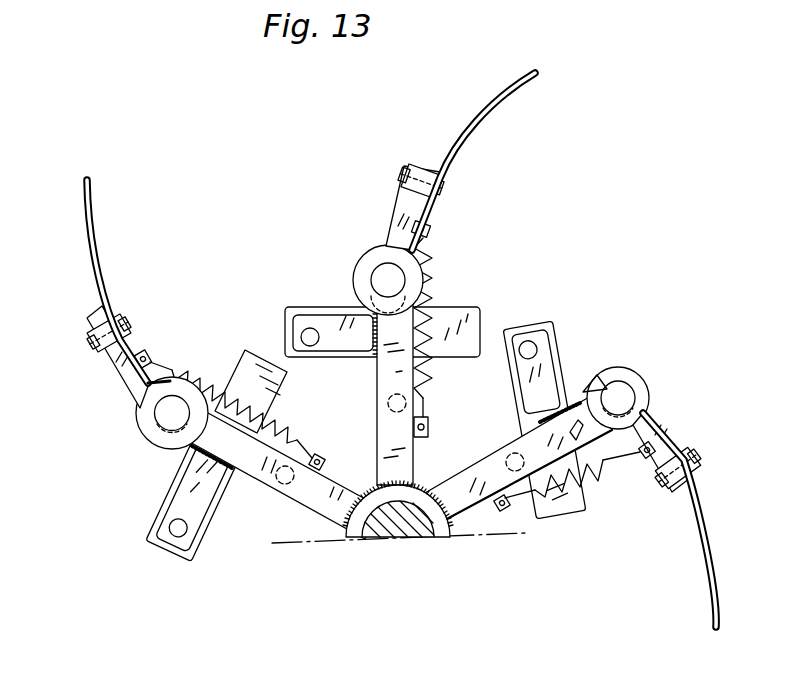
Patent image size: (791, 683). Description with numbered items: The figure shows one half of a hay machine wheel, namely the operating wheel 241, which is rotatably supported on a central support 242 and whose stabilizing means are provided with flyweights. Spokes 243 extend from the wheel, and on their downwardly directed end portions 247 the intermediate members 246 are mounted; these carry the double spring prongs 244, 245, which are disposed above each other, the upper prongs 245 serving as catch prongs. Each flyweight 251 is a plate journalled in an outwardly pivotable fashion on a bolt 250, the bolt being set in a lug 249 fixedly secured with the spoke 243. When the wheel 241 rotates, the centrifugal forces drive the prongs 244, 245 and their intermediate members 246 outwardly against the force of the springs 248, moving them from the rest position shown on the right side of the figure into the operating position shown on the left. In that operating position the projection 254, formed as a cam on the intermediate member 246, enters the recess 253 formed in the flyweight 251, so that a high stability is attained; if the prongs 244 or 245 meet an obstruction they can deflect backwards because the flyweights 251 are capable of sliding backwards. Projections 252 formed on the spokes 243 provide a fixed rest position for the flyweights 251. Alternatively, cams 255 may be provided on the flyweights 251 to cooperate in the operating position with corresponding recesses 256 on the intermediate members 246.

The operating wheel 241 is at (233, 163).
The support 242 is at (393, 517).
The spokes 243 is at (478, 490).
The prongs 244 is at (498, 108).
The upper prongs 245 is at (399, 238).
The intermediate members 246 is at (670, 430).
The downwardly directed end portions 247 is at (661, 454).
The springs 248 is at (605, 467).
The lugs 249 is at (202, 503).
The bolts 250 is at (178, 532).
The flyweight 251 is at (250, 372).
The projections 252 is at (287, 484).
The recess 253 is at (205, 410).
The projection 254 is at (200, 428).
The cams 255 is at (577, 413).
The recesses 256 is at (598, 373).